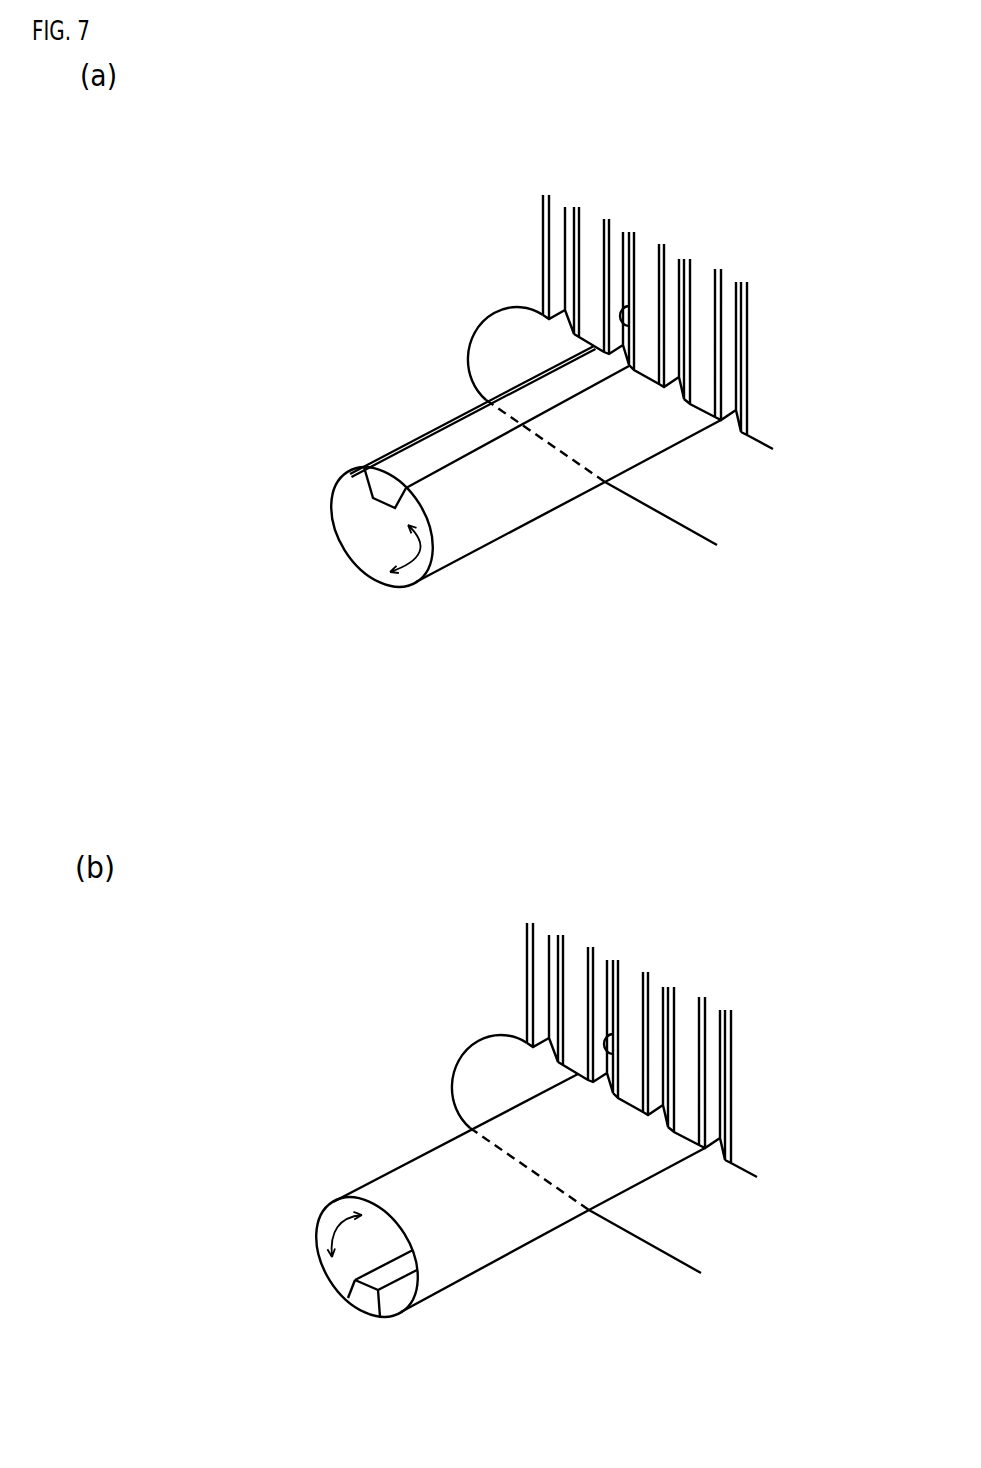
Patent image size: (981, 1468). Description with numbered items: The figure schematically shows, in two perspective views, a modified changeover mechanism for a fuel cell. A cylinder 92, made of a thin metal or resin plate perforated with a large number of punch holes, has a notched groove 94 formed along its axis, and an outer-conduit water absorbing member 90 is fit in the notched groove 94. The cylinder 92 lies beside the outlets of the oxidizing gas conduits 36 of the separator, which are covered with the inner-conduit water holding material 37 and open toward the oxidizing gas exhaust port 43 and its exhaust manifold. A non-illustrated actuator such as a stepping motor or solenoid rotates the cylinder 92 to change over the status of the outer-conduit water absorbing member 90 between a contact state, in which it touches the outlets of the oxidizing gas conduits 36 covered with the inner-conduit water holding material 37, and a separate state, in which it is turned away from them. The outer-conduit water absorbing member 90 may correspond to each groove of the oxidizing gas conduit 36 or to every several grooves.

The oxidizing gas conduit 36 is at (693, 282).
The inner-conduit water holding material 37 is at (632, 330).
The oxidizing gas exhaust port 43 is at (495, 312).
The outer-conduit water absorbing member 90 is at (518, 400).
The cylinder 92 is at (473, 538).
The notched groove 94 is at (447, 427).